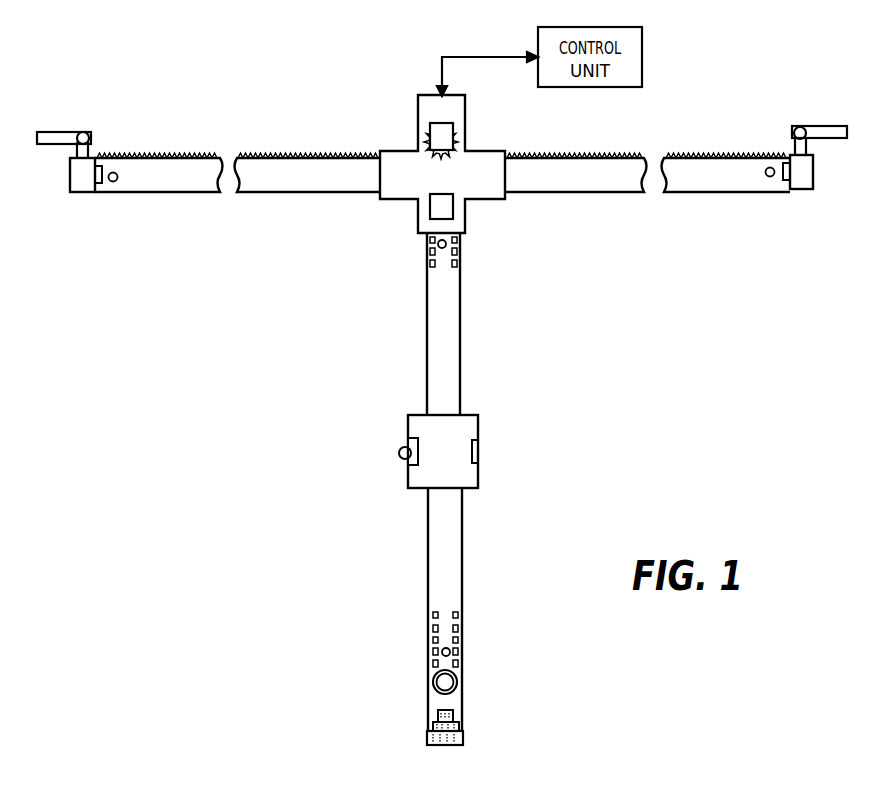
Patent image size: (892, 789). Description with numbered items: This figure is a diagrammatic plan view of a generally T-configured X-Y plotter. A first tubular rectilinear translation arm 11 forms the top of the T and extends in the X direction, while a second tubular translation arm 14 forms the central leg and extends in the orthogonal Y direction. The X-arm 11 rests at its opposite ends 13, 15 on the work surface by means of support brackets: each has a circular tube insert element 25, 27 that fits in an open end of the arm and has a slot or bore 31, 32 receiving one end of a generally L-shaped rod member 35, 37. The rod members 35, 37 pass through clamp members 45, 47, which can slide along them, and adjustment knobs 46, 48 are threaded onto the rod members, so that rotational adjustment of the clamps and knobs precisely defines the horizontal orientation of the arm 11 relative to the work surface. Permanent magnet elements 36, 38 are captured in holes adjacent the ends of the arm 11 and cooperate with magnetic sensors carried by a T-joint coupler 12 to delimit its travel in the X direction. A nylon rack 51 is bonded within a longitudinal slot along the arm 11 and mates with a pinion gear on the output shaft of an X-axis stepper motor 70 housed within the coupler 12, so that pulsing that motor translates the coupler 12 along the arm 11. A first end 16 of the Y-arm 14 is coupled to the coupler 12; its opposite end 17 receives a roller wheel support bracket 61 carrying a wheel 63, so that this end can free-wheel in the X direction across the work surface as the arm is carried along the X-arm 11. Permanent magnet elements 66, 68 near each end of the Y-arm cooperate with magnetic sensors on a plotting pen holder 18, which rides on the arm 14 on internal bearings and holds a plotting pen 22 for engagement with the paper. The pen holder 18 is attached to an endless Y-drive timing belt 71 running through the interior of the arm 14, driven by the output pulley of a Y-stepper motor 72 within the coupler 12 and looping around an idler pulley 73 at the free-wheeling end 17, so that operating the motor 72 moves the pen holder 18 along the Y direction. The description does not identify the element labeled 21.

The first rectilinear translation arm 11 is at (613, 192).
The T-joint coupler 12 is at (478, 145).
The end of translation arm 13 is at (98, 193).
The second rectilinear translation arm 14 is at (462, 542).
The end of translation arm 15 is at (792, 192).
The first end of translation arm 16 is at (460, 238).
The opposite end of Y translation arm 17 is at (438, 716).
The plotting pen holder 18 is at (478, 430).
The notch 21 is at (408, 462).
The plotting pen 22 is at (399, 452).
The circular tube insert element 25 is at (70, 180).
The circular tube insert element 27 is at (813, 180).
The slot or bore 31 is at (78, 193).
The slot or bore 32 is at (806, 189).
The L-shaped rod member 35 is at (88, 149).
The permanent magnet element 36 is at (114, 182).
The L-shaped rod member 37 is at (807, 145).
The permanent magnet element 38 is at (770, 177).
The clamp member 45 is at (57, 131).
The adjustment knob 46 is at (84, 131).
The clamp member 47 is at (836, 126).
The adjustment knob 48 is at (797, 127).
The rack 51 is at (604, 152).
The roller wheel support bracket 61 is at (460, 727).
The wheel 63 is at (463, 746).
The permanent magnet element 66 is at (442, 249).
The permanent magnet element 68 is at (442, 652).
The X-axis stepper motor 70 is at (453, 128).
The Y-drive timing belt 71 is at (459, 625).
The Y-stepper motor 72 is at (430, 208).
The idler pulley 73 is at (457, 682).